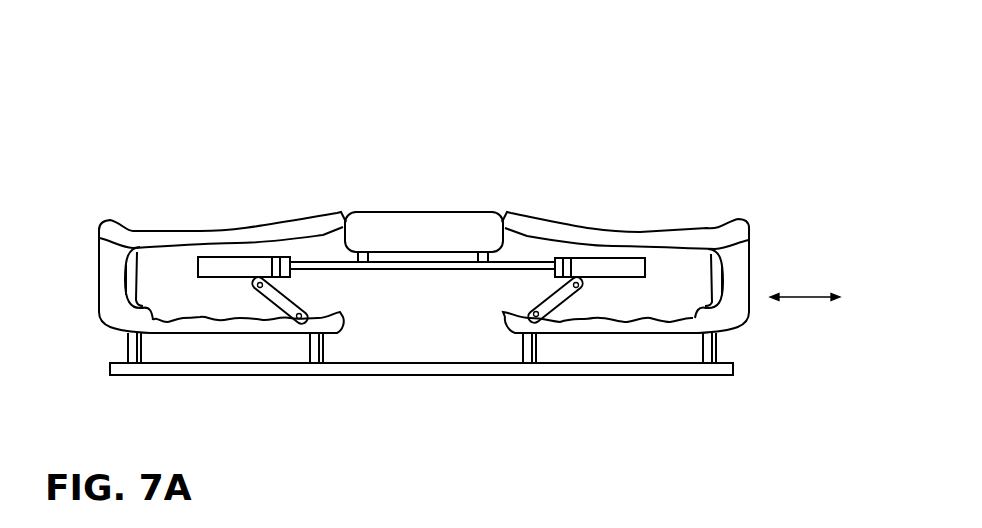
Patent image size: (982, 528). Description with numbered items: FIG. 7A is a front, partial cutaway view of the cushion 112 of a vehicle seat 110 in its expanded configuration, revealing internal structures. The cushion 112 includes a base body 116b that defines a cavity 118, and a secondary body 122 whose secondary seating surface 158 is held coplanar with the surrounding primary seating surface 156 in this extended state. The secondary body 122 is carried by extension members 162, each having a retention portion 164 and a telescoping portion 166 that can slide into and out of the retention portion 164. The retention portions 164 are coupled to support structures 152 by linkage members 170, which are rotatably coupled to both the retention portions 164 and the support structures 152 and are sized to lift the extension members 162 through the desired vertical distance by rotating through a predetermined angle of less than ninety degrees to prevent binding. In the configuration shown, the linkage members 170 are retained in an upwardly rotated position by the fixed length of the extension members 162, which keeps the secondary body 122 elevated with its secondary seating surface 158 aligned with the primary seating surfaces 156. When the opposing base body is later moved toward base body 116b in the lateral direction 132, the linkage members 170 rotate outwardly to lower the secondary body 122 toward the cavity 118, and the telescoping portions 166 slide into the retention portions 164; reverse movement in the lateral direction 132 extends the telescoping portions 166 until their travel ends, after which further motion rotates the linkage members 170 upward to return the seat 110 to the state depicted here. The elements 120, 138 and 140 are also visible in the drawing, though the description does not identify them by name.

The vehicle seat 110 is at (609, 105).
The cushion 112 is at (775, 268).
The base body 116b is at (132, 230).
The cavity 118 is at (153, 265).
The seat cushion 120 is at (345, 326).
The secondary body 122 is at (428, 233).
The lateral direction 132 is at (803, 299).
The leg 138 is at (127, 343).
The base plate 140 is at (683, 370).
The support structure 152 is at (124, 297).
The primary seating surface 156 is at (195, 232).
The secondary seating surface 158 is at (387, 213).
The extension member 162 is at (228, 240).
The retention portion 164 is at (253, 262).
The telescoping portion 166 is at (317, 218).
The linkage member 170 is at (270, 297).